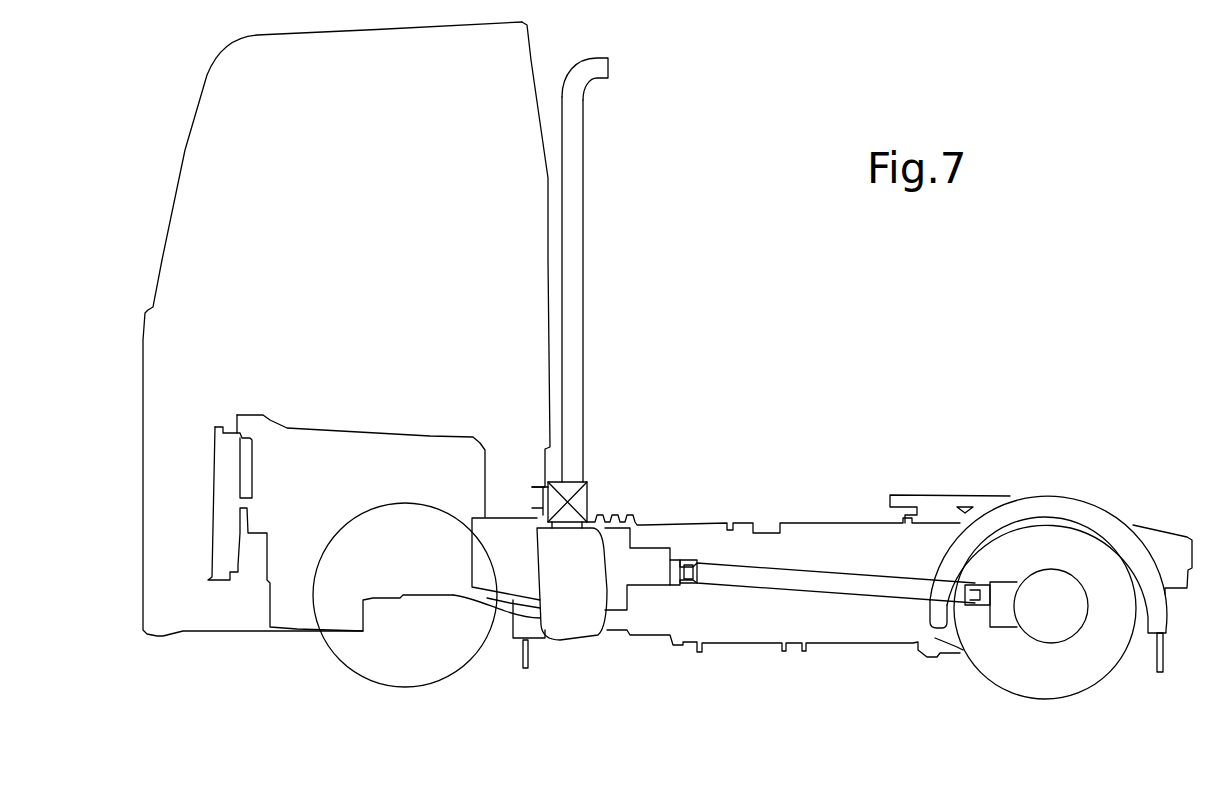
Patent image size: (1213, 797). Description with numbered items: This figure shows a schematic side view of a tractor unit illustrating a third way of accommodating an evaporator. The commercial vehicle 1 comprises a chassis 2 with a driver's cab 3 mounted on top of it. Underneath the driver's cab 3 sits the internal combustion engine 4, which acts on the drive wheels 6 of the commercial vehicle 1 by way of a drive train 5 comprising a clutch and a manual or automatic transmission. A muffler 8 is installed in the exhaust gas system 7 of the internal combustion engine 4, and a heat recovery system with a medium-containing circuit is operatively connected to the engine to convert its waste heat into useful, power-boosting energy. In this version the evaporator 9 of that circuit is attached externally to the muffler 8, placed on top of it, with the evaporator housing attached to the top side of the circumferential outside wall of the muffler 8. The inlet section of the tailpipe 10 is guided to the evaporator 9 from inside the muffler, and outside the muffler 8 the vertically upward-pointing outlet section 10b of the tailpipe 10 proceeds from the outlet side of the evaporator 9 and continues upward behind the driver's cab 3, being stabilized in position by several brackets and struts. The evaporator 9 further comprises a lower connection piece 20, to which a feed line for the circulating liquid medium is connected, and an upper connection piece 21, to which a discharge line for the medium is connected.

The commercial vehicle 1 is at (754, 476).
The chassis 2 is at (837, 508).
The driver's cab 3 is at (125, 332).
The internal combustion engine 4 is at (298, 534).
The drive train 5 is at (859, 600).
The drive wheels 6 is at (413, 665).
The exhaust gas system 7 is at (484, 620).
The muffler 8 is at (567, 632).
The evaporator 9 is at (603, 498).
The tailpipe 10 is at (598, 369).
The outlet section of the tailpipe 10b is at (578, 138).
The lower connection piece 20 is at (545, 521).
The upper connection piece 21 is at (543, 485).